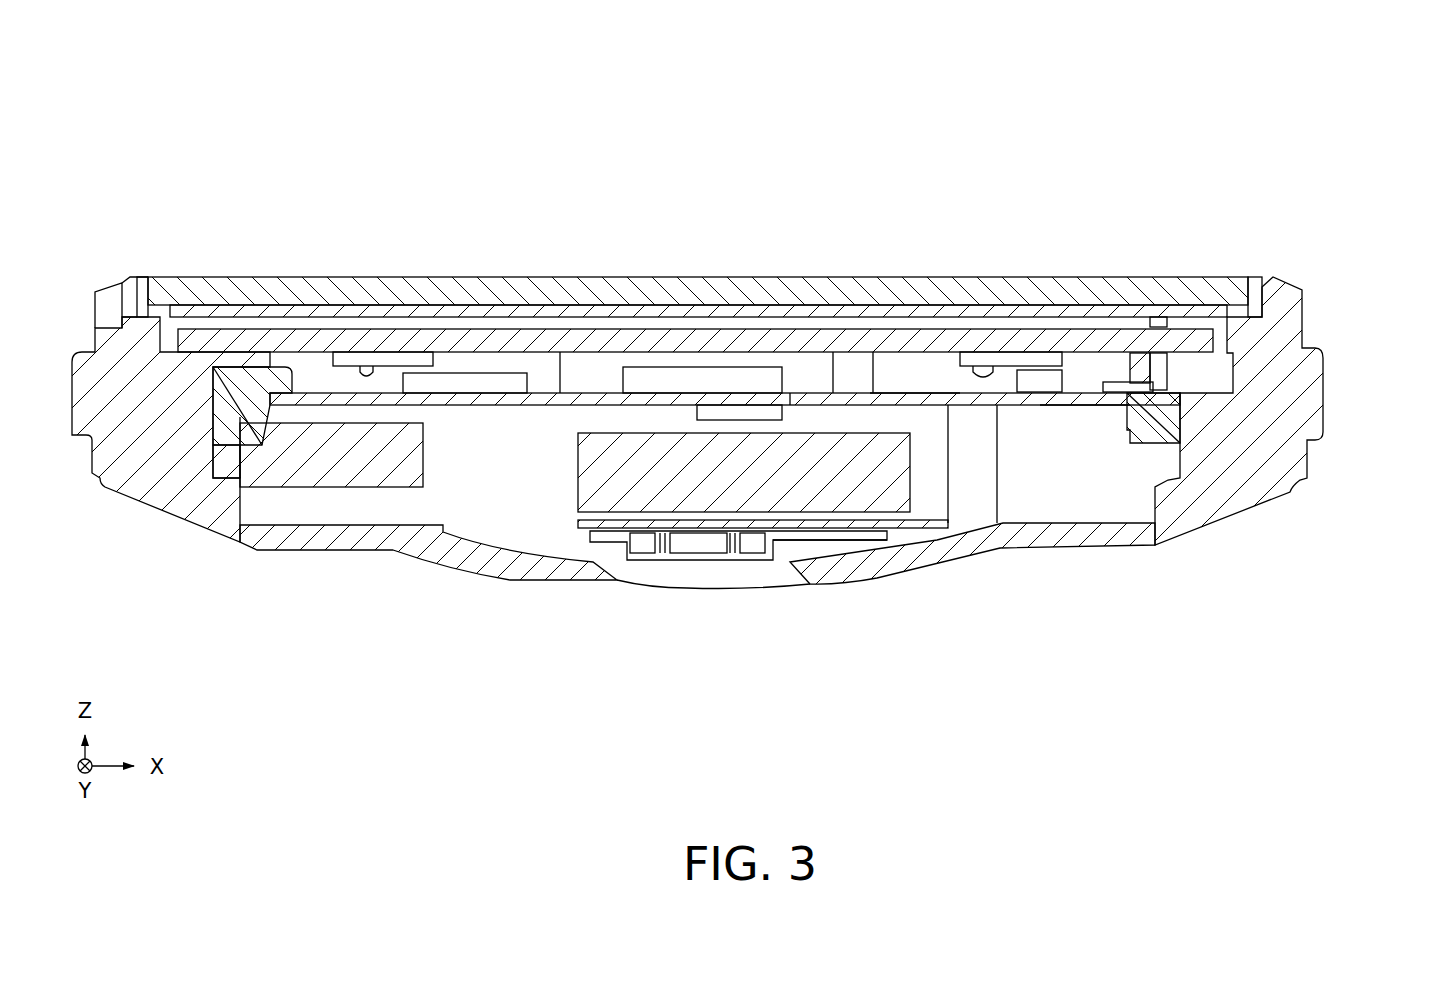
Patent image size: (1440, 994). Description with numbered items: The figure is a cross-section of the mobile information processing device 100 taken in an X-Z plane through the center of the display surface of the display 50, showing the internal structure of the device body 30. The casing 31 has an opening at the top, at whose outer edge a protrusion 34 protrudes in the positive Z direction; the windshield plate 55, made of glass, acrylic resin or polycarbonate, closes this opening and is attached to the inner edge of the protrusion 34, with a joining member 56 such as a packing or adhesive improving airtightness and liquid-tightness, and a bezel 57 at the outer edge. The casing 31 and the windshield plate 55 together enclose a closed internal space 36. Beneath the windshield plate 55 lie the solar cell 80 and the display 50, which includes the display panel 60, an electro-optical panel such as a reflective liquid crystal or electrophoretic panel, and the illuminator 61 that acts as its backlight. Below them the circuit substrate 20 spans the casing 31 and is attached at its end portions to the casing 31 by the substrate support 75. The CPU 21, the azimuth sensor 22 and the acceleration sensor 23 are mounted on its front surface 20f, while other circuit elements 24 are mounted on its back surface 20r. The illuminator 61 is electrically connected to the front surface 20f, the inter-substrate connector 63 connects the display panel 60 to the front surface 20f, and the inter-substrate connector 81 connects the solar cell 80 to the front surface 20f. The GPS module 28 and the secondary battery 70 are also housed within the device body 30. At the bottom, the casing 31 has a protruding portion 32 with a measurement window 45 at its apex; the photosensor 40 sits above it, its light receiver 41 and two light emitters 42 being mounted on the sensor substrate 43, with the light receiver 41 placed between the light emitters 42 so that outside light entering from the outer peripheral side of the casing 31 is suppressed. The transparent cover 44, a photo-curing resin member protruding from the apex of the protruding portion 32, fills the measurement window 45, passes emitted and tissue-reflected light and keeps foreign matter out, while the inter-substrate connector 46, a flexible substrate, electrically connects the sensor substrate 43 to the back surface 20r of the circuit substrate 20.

The mobile information processing device 100 is at (1324, 127).
The circuit substrate 20 is at (862, 400).
The front surface 20f is at (920, 390).
The back surface 20r is at (1077, 408).
The CPU 21 is at (744, 378).
The azimuth sensor 22 is at (1066, 380).
The acceleration sensor 23 is at (485, 378).
The circuit elements 24 is at (800, 404).
The GPS module 28 is at (355, 465).
The device body 30 is at (1336, 392).
The casing 31 is at (1250, 492).
The protruding portion 32 is at (875, 583).
The protrusion 34 is at (128, 276).
The internal space 36 is at (503, 500).
The photosensor 40 is at (640, 668).
The light receiver 41 is at (700, 557).
The light emitters 42 is at (645, 557).
The sensor substrate 43 is at (843, 535).
The transparent cover 44 is at (772, 568).
The measurement window 45 is at (652, 586).
The inter-substrate connector 46 is at (975, 497).
The display 50 is at (702, 266).
The windshield plate 55 is at (312, 296).
The joining member 56 is at (150, 282).
The bezel 57 is at (103, 292).
The display panel 60 is at (663, 340).
The illuminator 61 is at (368, 372).
The inter-substrate connector 63 is at (562, 375).
The secondary battery 70 is at (614, 458).
The substrate support 75 is at (224, 420).
The solar cell 80 is at (250, 310).
The inter-substrate connector 81 is at (1176, 316).